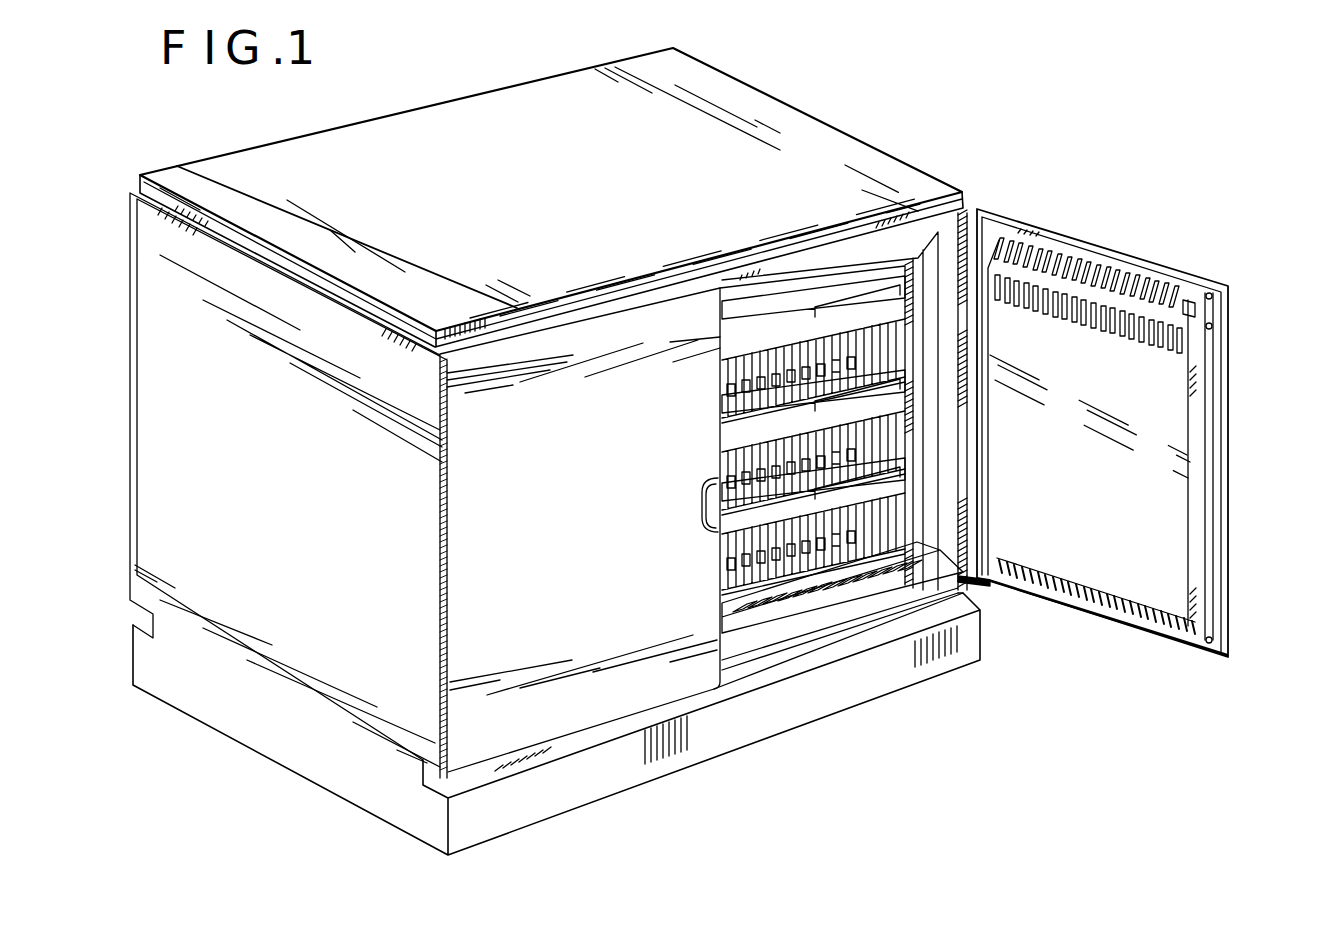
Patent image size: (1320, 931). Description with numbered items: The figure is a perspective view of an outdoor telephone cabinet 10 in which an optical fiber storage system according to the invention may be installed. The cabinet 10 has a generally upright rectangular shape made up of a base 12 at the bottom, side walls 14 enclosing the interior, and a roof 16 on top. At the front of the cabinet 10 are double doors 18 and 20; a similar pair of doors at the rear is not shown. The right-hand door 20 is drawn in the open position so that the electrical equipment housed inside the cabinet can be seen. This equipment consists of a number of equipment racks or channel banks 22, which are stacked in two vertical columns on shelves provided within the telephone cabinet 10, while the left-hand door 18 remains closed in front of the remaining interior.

The telephone cabinet 10 is at (878, 124).
The base 12 is at (820, 712).
The side walls 14 is at (142, 440).
The roof 16 is at (416, 126).
The double door 18 is at (580, 710).
The right-hand door 20 is at (1228, 484).
The equipment racks or channel banks 22 is at (722, 373).